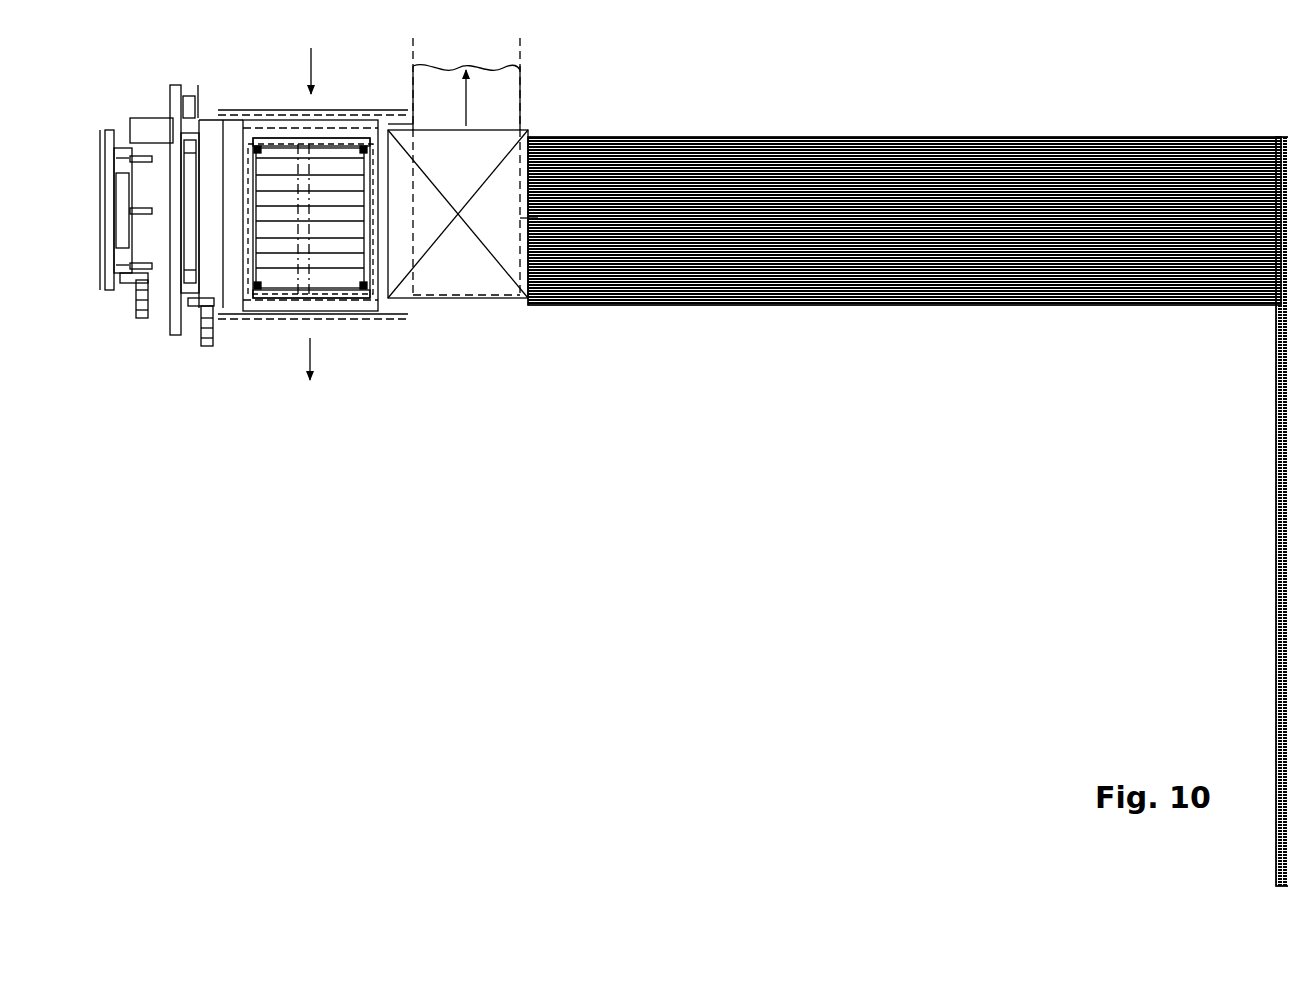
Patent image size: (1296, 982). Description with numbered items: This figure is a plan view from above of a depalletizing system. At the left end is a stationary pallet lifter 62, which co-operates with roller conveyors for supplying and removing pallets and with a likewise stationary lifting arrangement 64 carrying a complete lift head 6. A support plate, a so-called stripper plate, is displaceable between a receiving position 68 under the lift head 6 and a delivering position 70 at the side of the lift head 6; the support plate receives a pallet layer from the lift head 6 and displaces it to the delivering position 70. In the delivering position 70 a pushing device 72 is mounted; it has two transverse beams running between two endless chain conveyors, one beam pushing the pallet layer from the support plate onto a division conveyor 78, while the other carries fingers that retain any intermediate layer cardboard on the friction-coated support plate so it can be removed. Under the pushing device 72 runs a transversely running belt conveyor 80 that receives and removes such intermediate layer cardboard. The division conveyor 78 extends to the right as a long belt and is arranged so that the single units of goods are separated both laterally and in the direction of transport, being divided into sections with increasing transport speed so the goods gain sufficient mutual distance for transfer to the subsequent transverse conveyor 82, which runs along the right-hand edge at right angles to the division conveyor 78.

The lift head 6 is at (325, 256).
The pallet lifter 62 is at (126, 228).
The lifting arrangement 64 is at (195, 216).
The receiving position 68 is at (280, 318).
The delivering position 70 is at (441, 300).
The pushing device 72 is at (477, 265).
The division conveyor 78 is at (977, 140).
The belt conveyor 80 is at (500, 95).
The transverse conveyor 82 is at (1268, 490).